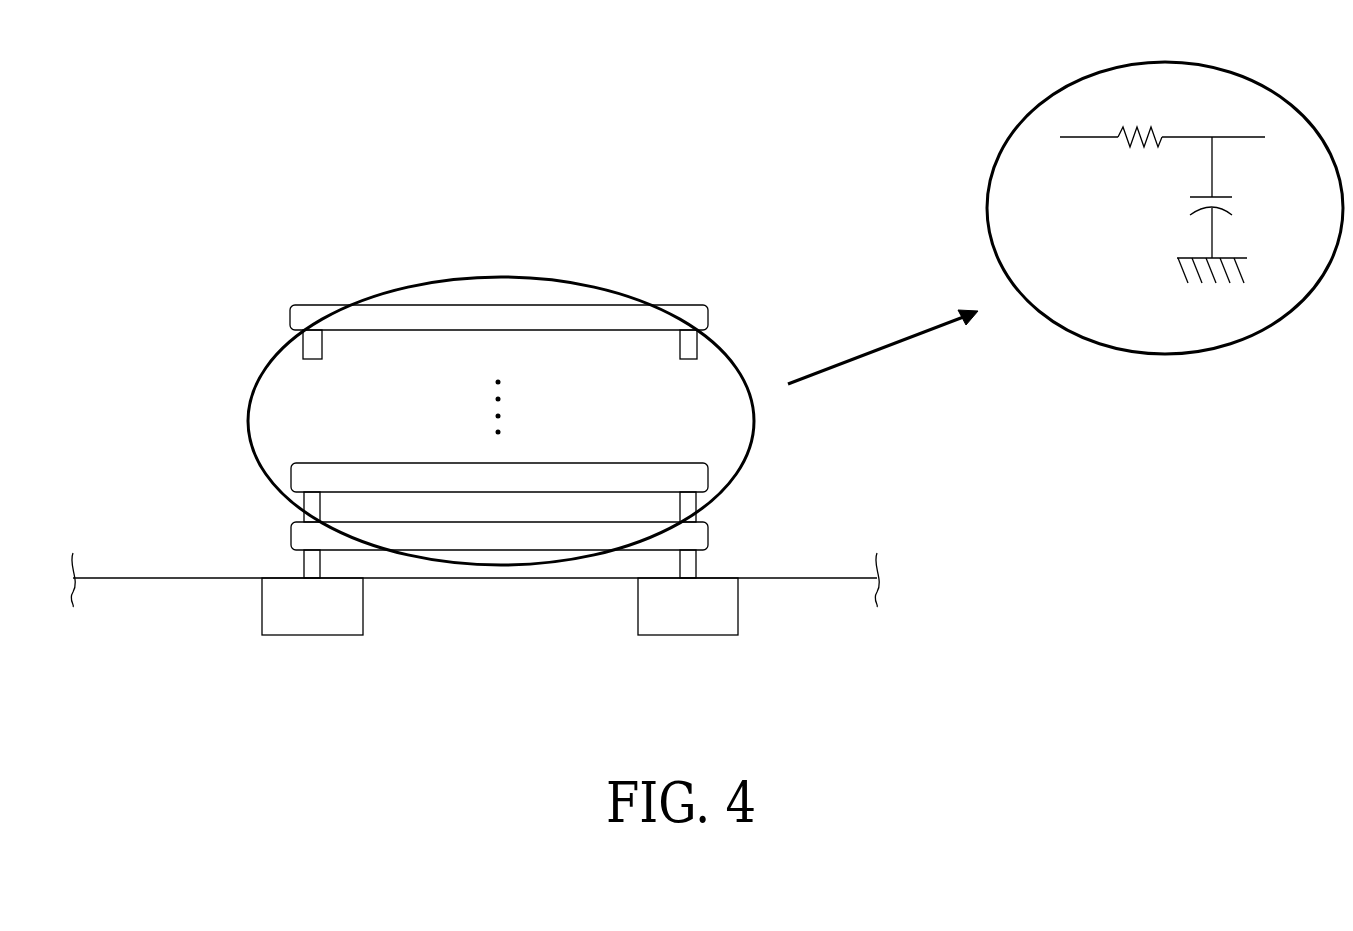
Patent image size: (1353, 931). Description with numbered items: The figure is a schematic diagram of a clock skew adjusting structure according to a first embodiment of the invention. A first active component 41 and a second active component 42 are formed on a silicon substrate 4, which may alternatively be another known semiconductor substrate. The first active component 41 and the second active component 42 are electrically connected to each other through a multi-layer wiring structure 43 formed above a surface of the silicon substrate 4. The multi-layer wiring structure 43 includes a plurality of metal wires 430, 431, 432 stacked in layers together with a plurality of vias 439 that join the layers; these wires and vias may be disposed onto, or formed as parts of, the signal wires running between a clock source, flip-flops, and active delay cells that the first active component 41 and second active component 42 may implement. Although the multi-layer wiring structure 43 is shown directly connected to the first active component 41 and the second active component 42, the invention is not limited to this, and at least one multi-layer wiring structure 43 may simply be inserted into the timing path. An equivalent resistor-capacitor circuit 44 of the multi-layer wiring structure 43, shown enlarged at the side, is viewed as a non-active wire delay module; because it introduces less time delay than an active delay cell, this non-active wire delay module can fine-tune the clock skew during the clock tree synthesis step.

The silicon substrate 4 is at (112, 595).
The first active component 41 is at (318, 620).
The second active component 42 is at (686, 620).
The multi-layer wiring structure 43 is at (502, 278).
The metal wire 430 is at (510, 540).
The metal wire 431 is at (697, 472).
The metal wire 432 is at (688, 315).
The via 439 is at (312, 344).
The equivalent resistor-capacitor (RC) circuit 44 is at (985, 208).